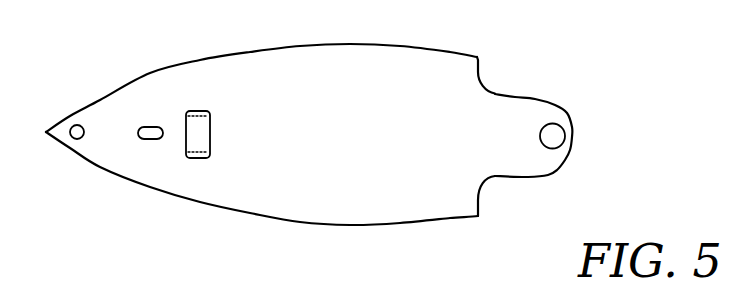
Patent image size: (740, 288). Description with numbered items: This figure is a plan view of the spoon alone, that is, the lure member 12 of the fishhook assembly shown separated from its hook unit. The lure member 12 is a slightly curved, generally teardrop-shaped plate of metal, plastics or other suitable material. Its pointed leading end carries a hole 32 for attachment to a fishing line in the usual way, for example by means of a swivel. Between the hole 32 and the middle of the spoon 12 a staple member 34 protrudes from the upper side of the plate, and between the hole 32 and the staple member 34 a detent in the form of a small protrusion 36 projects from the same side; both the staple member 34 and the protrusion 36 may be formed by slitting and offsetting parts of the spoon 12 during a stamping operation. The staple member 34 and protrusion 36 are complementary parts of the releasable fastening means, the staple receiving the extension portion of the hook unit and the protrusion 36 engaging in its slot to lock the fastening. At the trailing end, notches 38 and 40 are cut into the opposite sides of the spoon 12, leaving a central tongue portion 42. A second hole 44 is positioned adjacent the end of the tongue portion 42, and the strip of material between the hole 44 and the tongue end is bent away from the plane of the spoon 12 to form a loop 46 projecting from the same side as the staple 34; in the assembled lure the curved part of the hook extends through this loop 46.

The lure member 12 is at (336, 146).
The hole 32 is at (78, 125).
The staple member 34 is at (197, 133).
The protrusion 36 is at (152, 127).
The notch 38 is at (497, 79).
The notch 40 is at (498, 197).
The tongue portion 42 is at (508, 118).
The second hole 44 is at (548, 141).
The loop 46 is at (562, 156).